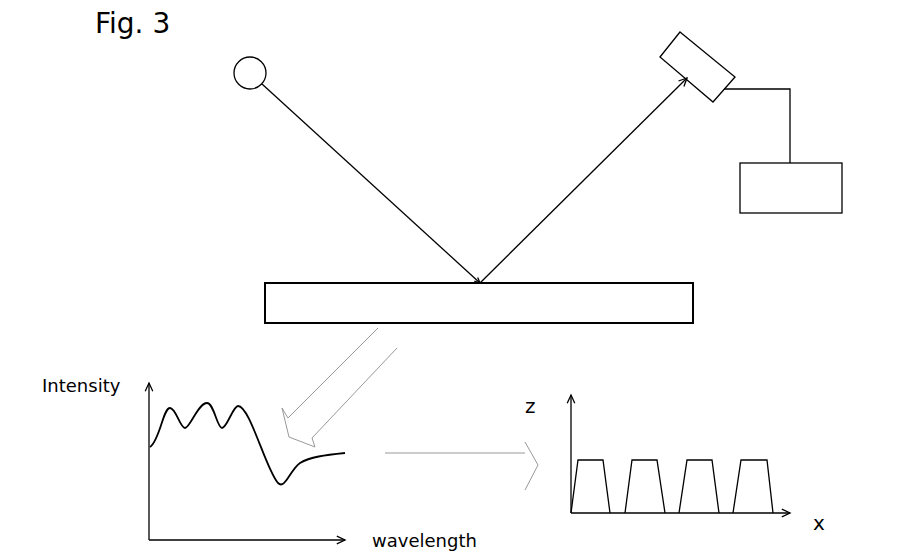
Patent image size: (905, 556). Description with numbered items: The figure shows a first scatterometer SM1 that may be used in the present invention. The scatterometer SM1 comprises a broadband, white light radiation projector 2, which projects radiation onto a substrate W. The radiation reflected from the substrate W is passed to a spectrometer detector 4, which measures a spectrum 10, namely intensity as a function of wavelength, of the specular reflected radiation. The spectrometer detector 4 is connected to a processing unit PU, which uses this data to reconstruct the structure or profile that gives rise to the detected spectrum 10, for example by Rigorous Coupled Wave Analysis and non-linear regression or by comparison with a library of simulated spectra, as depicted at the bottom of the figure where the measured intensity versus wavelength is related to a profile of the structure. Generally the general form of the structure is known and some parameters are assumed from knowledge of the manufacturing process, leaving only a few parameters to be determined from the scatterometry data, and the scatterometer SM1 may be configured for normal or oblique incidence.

The broadband radiation projector 2 is at (267, 70).
The spectrometer detector 4 is at (725, 68).
The spectrum 10 is at (610, 107).
The scatterometer SM1 is at (223, 173).
The substrate W is at (468, 312).
The processing unit PU is at (783, 151).